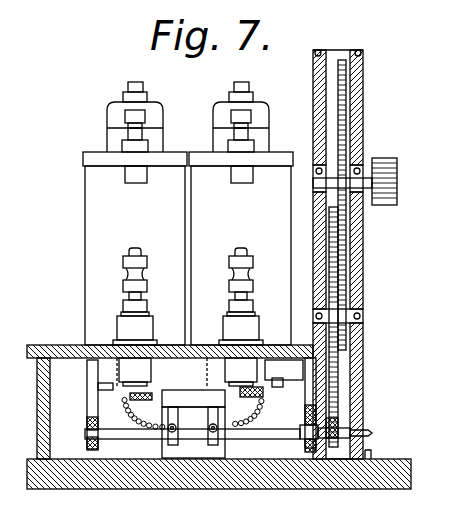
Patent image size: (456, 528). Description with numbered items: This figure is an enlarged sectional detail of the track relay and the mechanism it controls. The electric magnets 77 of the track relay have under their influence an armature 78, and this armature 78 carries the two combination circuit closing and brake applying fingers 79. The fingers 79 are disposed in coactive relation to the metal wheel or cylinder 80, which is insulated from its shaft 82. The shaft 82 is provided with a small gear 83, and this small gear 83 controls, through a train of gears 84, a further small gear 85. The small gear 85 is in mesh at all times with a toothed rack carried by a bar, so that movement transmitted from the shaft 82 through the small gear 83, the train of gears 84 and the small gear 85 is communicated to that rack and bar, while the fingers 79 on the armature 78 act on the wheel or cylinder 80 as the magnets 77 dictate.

The electric magnets 77 is at (98, 229).
The armature 78 is at (193, 387).
The combination circuit closing and brake applying fingers 79 is at (210, 415).
The metal wheel or cylinder 80 is at (178, 455).
The shaft 82 is at (228, 420).
The small gear 83 is at (340, 422).
The train of gears 84 is at (338, 350).
The small gear 85 is at (385, 158).